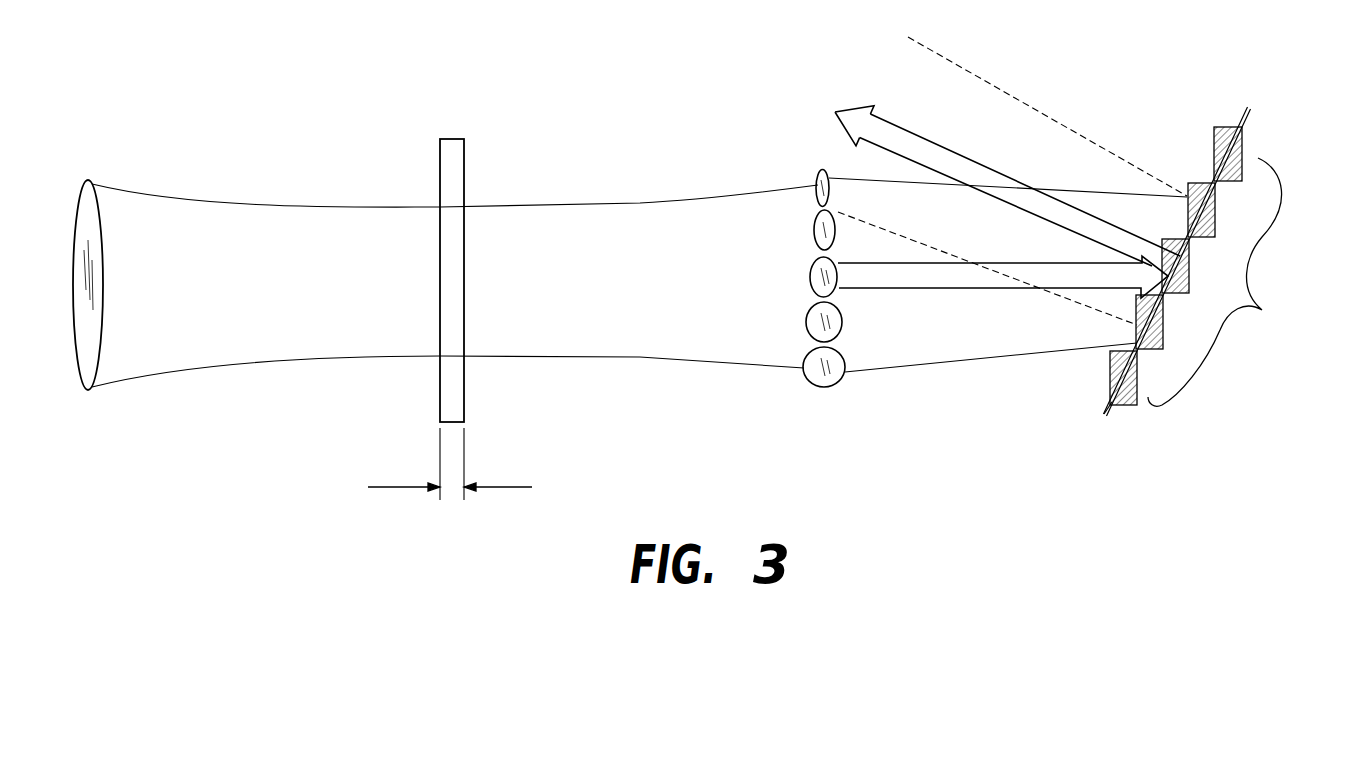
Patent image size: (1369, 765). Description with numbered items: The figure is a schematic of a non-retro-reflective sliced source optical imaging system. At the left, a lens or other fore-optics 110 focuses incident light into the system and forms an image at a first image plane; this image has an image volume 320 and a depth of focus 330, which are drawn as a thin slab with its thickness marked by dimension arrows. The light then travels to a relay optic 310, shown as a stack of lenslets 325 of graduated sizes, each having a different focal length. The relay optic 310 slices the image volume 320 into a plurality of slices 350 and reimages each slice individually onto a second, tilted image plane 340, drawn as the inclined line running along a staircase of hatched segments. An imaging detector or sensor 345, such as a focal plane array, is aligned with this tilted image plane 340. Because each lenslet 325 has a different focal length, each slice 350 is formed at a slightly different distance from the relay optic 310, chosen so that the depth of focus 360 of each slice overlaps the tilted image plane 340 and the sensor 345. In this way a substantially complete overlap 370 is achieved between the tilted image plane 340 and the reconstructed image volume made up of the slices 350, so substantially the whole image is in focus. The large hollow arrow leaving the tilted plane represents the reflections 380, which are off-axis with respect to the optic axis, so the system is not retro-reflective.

The fore-optics 110 is at (94, 181).
The relay optic 310 is at (756, 310).
The image volume 320 is at (465, 142).
The lenslets 325 is at (806, 313).
The depth of focus 330 is at (397, 485).
The tilted image plane 340 is at (1116, 234).
The imaging detector 345 is at (1244, 112).
The slices 350 is at (1110, 383).
The depth of focus of each slice 360 is at (1140, 412).
The overlap 370 is at (1231, 282).
The reflections 380 is at (836, 110).